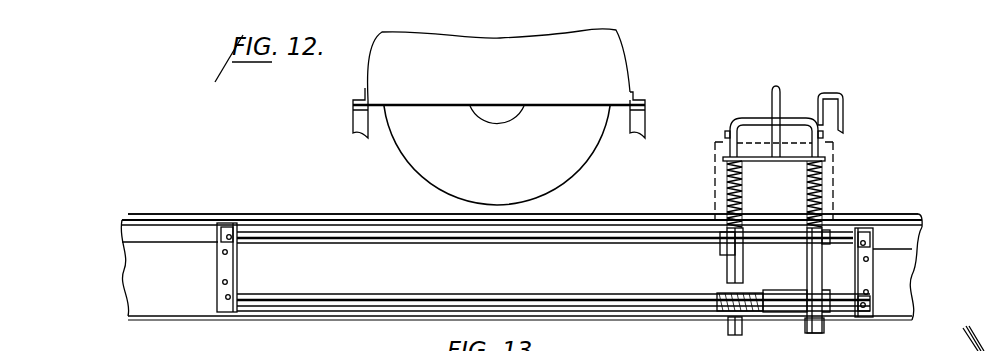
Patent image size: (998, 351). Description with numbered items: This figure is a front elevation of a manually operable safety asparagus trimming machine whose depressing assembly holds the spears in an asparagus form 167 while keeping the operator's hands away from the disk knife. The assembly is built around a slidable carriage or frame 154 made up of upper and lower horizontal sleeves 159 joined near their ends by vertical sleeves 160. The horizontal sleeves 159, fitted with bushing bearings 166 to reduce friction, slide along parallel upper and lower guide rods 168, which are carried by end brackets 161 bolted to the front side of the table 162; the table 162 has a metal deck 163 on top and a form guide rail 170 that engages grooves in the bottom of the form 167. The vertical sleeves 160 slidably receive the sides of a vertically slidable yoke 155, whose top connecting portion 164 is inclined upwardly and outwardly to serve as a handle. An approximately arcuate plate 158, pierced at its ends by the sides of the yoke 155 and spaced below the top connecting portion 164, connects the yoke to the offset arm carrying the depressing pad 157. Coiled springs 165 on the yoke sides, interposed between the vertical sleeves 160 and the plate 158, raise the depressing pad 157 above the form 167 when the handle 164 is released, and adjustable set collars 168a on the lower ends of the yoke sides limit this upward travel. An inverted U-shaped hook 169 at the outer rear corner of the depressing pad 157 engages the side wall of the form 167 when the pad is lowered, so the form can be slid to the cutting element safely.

The slidable carriage or frame 154 is at (713, 335).
The vertically slidable yoke 155 is at (760, 141).
The depressing pad 157 is at (788, 135).
The arcuate plate 158 is at (827, 158).
The horizontal sleeves 159 is at (763, 242).
The vertical sleeves 160 is at (728, 262).
The end brackets 161 is at (235, 258).
The table 162 is at (138, 242).
The metal deck 163 is at (282, 220).
The top connecting portion of the yoke 164 is at (748, 121).
The coiled springs 165 is at (728, 188).
The bushing bearings 166 is at (723, 295).
The asparagus form 167 is at (715, 157).
The guide rods 168 is at (358, 298).
The adjustable set collars 168a is at (820, 322).
The inverted U-shaped hook 169 is at (843, 102).
The form guide rail 170 is at (343, 216).